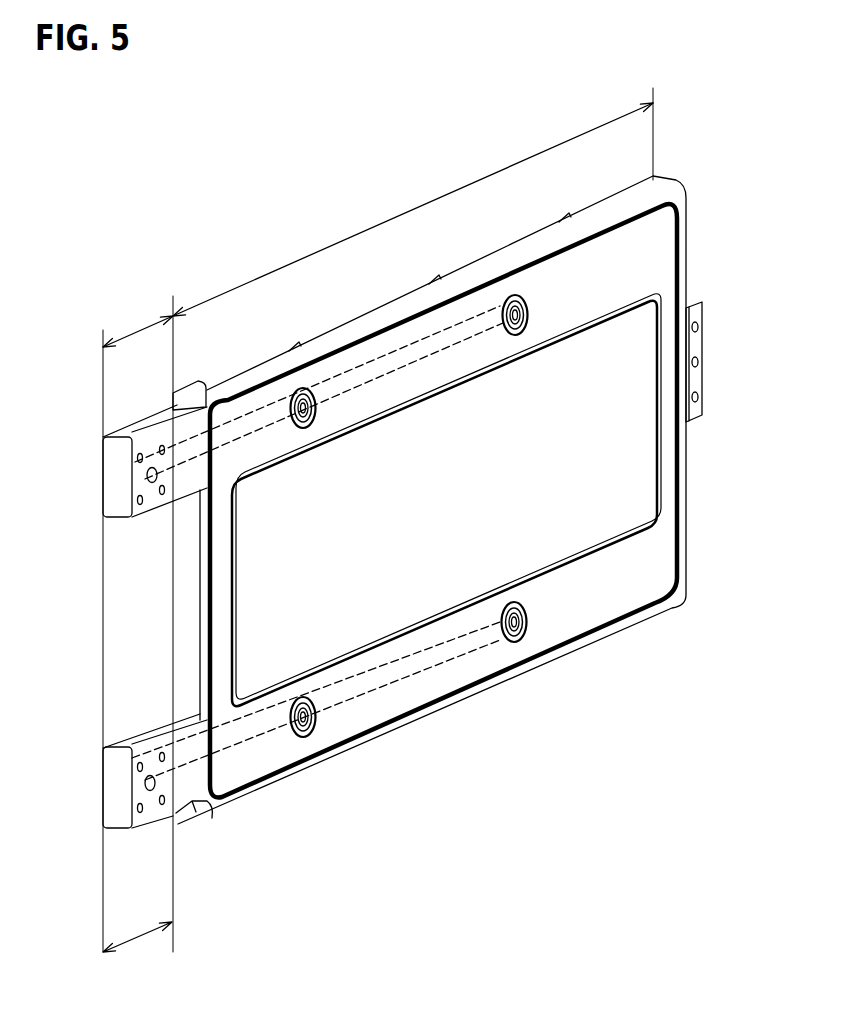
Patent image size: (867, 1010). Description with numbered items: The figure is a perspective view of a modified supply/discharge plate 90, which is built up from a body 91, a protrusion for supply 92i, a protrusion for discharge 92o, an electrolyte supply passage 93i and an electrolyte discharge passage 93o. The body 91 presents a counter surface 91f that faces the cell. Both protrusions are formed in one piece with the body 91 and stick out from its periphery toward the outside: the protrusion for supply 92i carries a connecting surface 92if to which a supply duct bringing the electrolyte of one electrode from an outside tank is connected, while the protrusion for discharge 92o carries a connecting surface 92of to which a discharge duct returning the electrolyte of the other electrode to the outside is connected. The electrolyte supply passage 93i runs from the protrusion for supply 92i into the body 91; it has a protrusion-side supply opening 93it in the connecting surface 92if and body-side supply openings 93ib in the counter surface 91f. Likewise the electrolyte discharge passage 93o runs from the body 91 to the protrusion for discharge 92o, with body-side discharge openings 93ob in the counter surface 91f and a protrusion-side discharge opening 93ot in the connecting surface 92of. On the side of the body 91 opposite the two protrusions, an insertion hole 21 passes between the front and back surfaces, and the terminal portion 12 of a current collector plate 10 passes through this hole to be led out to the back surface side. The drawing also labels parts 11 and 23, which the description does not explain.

The supply/discharge plate 90 is at (247, 207).
The body 91 is at (407, 191).
The counter surface 91f is at (623, 232).
The protrusion for discharge 92o is at (155, 407).
The connecting surface 92of is at (138, 514).
The protrusion for supply 92i is at (155, 822).
The connecting surface 92if is at (145, 753).
The electrolyte discharge passage 93o is at (447, 333).
The body-side discharge openings 93ob is at (532, 313).
The protrusion-side discharge opening 93ot is at (157, 478).
The electrolyte supply passage 93i is at (393, 667).
The body-side supply openings 93ib is at (528, 622).
The protrusion-side supply opening 93it is at (140, 790).
The current collector plate 10 is at (468, 500).
The main frame plate 11 is at (600, 513).
The terminal portion 12 is at (693, 418).
The insertion hole 21 is at (657, 490).
The lower edge portion 23 is at (593, 553).